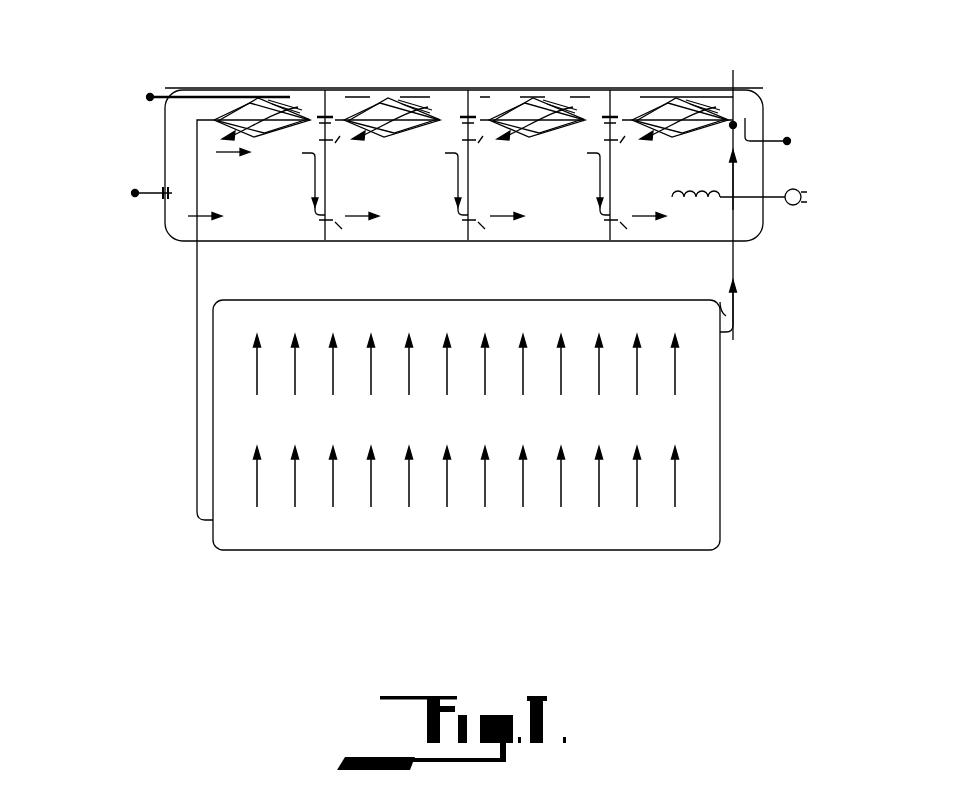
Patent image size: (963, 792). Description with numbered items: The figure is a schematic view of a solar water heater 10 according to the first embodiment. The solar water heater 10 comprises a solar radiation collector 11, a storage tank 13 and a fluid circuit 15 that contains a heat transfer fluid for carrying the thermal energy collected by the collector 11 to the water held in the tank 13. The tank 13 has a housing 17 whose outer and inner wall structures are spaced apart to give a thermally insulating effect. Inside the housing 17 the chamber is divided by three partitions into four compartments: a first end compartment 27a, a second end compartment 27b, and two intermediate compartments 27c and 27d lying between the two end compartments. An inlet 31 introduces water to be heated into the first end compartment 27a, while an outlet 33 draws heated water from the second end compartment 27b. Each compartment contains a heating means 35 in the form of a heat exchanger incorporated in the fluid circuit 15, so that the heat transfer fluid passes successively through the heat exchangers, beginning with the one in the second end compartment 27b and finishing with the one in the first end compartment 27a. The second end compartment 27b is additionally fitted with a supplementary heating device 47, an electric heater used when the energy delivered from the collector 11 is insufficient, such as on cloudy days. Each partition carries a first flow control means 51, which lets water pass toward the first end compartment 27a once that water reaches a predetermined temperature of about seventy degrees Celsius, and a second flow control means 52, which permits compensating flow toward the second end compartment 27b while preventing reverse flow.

The solar water heater 10 is at (133, 211).
The solar radiation collector 11 is at (722, 408).
The storage tank 13 is at (247, 88).
The fluid circuit 15 is at (736, 268).
The housing 17 is at (489, 88).
The first end compartment 27a is at (253, 208).
The second end compartment 27b is at (710, 217).
The intermediate compartment 27c is at (575, 208).
The intermediate compartment 27d is at (425, 208).
The inlet 31 is at (160, 190).
The outlet 33 is at (768, 133).
The heating means 35 is at (638, 127).
The supplementary heating device 47 is at (722, 192).
The first flow control means 51 is at (455, 138).
The second flow control means 52 is at (716, 316).